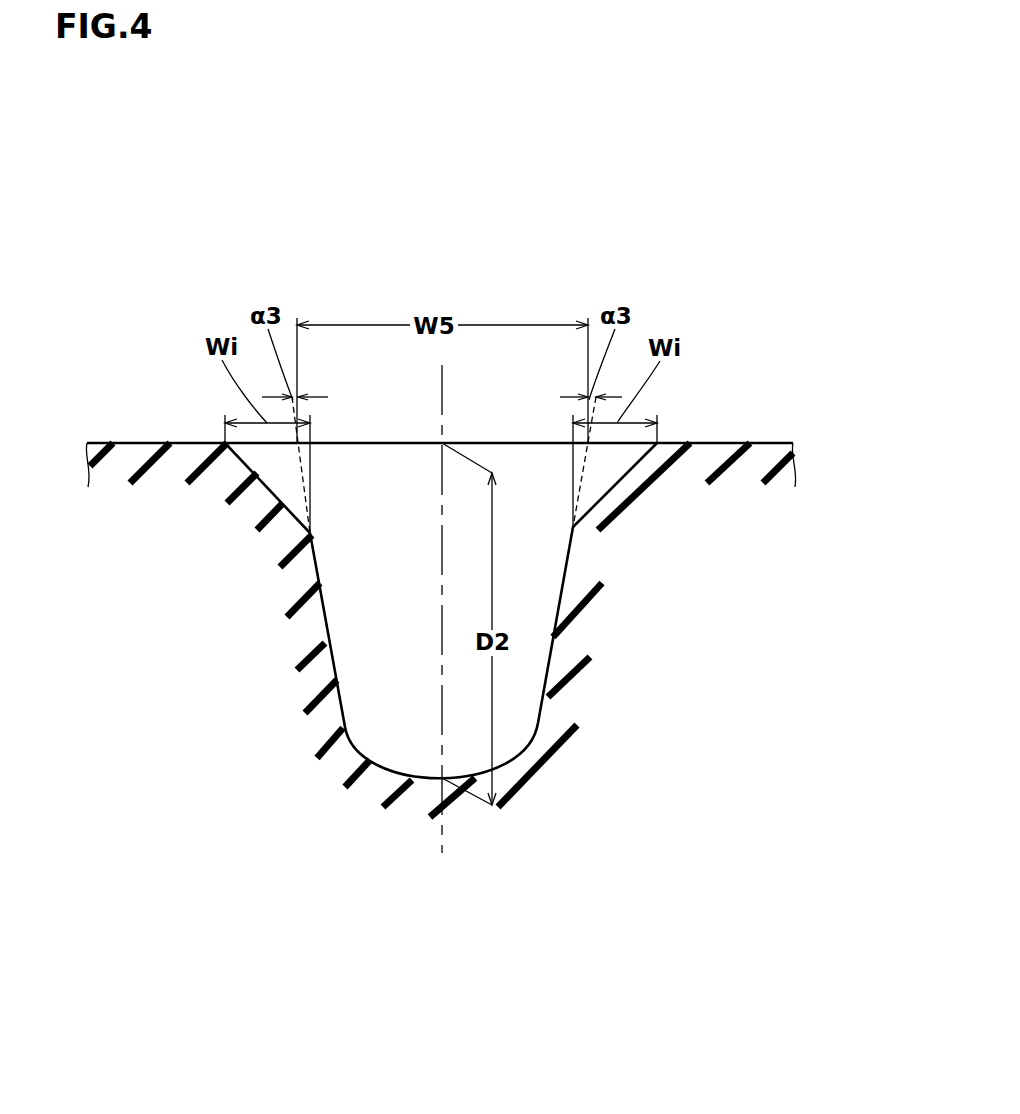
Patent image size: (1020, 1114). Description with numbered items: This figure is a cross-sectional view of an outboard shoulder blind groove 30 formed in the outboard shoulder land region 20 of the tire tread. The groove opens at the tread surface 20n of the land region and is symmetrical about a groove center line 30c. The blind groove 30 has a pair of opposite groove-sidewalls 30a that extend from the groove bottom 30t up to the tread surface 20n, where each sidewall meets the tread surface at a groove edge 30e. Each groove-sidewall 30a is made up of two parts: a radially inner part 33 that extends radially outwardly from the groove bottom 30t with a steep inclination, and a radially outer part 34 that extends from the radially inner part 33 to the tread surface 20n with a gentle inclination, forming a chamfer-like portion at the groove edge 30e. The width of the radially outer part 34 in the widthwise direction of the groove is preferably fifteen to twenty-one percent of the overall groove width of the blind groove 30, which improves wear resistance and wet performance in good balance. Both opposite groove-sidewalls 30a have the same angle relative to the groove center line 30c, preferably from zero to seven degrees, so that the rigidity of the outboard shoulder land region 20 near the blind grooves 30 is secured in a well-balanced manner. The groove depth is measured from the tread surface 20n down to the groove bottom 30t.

The outboard shoulder land region 20 is at (444, 473).
The tread surface of the outboard shoulder land region 20n is at (138, 443).
The outboard shoulder blind groove 30 is at (435, 601).
The groove-sidewall 30a is at (435, 585).
The groove center line 30c is at (443, 403).
The groove edge 30e is at (226, 443).
The groove bottom 30t is at (418, 778).
The radially inner part 33 is at (335, 670).
The radially outer part 34 is at (270, 496).